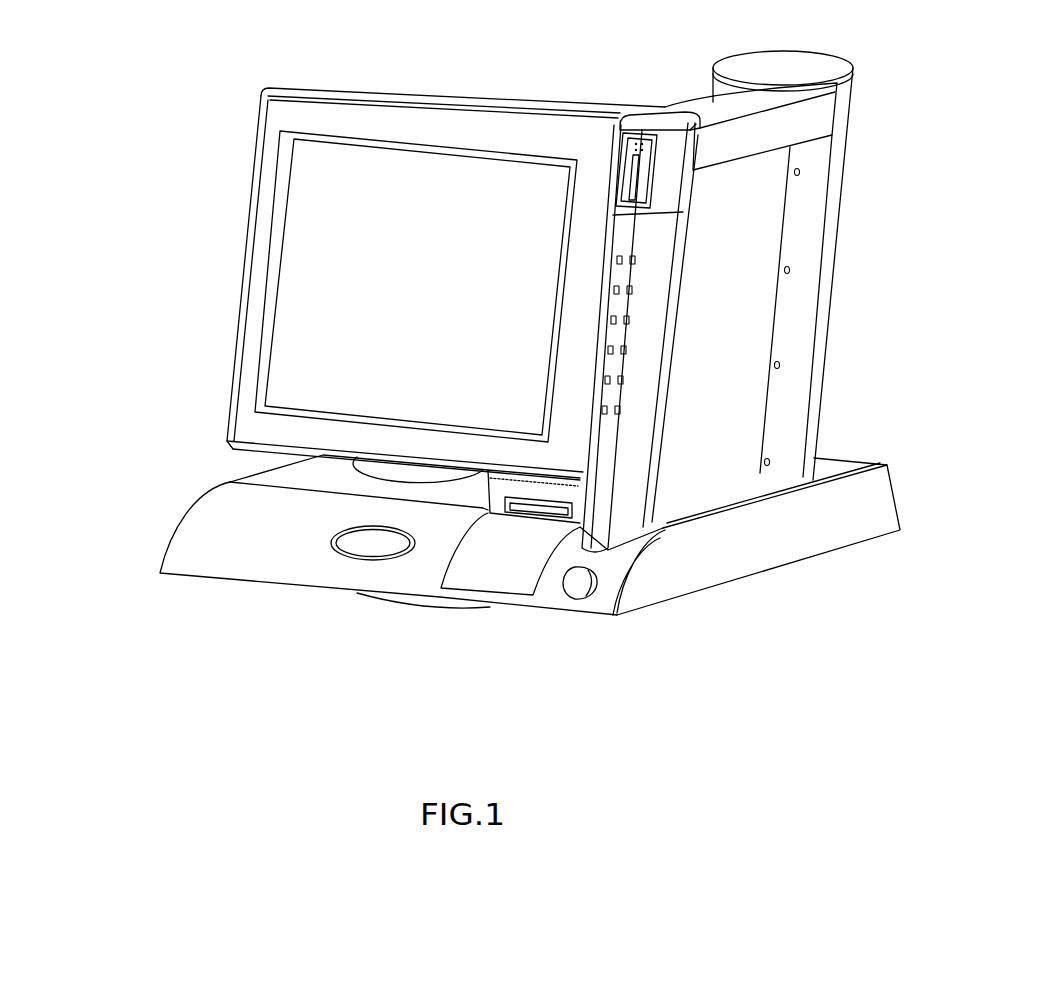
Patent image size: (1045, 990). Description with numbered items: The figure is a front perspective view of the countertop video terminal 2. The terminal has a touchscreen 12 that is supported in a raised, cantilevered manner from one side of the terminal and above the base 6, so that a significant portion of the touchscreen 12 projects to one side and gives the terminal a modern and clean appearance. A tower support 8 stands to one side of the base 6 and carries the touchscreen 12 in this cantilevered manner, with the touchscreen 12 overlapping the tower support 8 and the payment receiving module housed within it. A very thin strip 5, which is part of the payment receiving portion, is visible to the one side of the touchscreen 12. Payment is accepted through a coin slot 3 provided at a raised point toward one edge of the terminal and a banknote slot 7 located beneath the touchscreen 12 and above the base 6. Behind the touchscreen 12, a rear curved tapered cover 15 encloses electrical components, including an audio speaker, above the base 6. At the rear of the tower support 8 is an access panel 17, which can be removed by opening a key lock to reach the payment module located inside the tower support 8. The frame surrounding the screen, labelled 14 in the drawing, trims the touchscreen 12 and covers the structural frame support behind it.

The countertop video terminal 2 is at (120, 325).
The coin slot 3 is at (648, 155).
The thin strip 5 is at (721, 558).
The base 6 is at (336, 625).
The banknote slot 7 is at (504, 536).
The tower support 8 is at (872, 225).
The touchscreen 12 is at (302, 284).
The bezel 14 is at (267, 192).
The rear curved tapered cover 15 is at (543, 93).
The access panel 17 is at (847, 137).